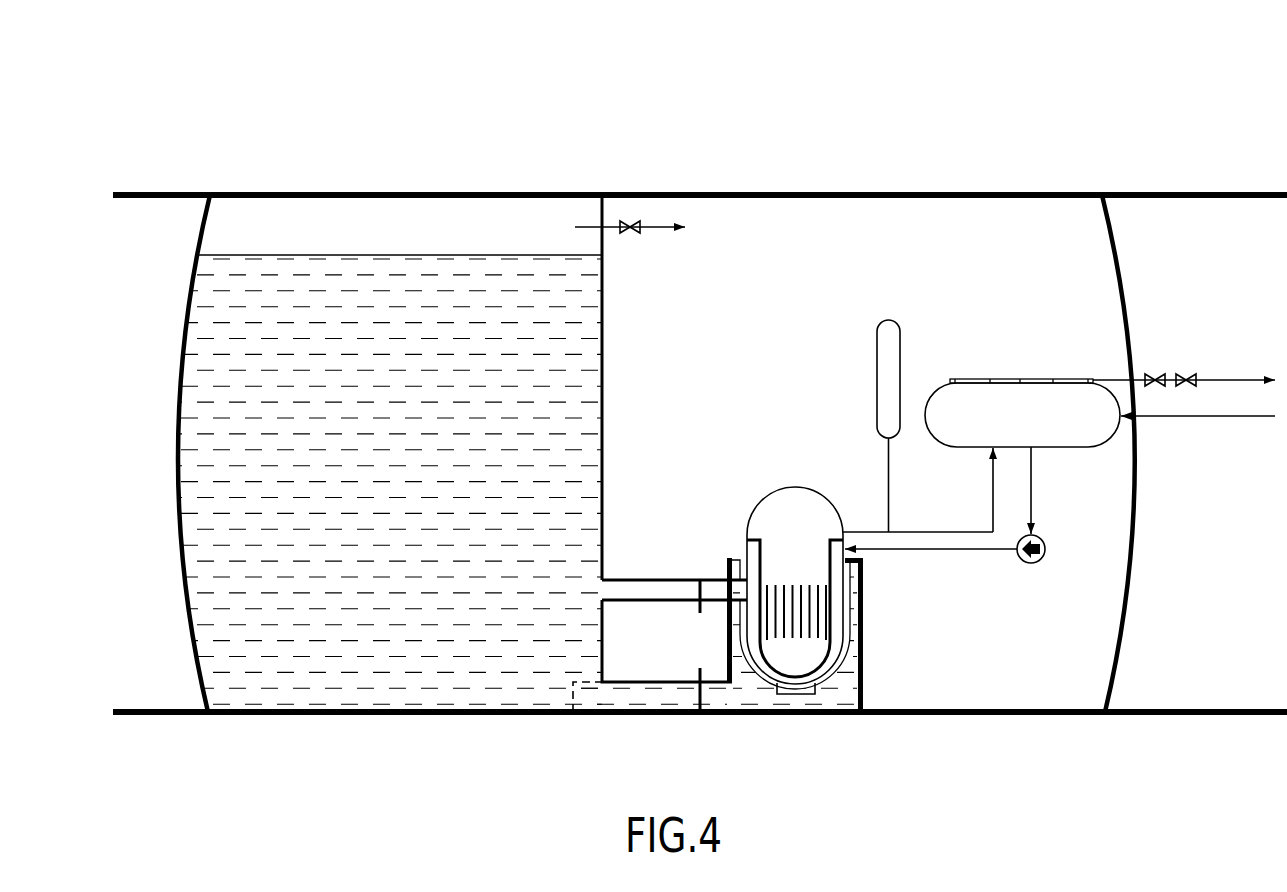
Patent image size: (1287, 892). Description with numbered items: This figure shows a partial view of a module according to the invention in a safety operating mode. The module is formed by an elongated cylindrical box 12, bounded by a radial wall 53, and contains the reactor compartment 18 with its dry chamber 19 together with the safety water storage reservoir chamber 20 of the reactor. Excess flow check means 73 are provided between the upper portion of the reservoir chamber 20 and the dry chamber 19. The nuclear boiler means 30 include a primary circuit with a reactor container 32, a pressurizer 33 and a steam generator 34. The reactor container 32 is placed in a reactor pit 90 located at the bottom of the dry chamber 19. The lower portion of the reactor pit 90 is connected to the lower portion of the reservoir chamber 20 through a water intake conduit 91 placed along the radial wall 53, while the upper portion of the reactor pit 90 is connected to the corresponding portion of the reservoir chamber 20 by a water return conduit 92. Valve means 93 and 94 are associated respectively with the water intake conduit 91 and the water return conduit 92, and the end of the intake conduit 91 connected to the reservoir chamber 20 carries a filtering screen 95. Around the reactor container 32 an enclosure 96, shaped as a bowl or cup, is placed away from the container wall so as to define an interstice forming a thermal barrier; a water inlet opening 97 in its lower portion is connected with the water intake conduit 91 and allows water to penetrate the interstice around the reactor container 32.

The elongated cylindrical box 12 is at (1018, 122).
The reactor compartment 18 is at (606, 183).
The dry chamber 19 is at (889, 183).
The safety water storage reservoir chamber 20 is at (376, 183).
The nuclear boiler means 30 is at (758, 521).
The reactor container 32 is at (752, 493).
The pressurizer 33 is at (910, 327).
The steam generator 34 is at (1022, 373).
The radial wall 53 is at (436, 724).
The excess flow check means 73 is at (634, 218).
The reactor pit 90 is at (876, 633).
The water intake conduit 91 is at (631, 698).
The water return conduit 92 is at (679, 575).
The valve means 93 is at (697, 670).
The valve means 94 is at (697, 607).
The filtering screen 95 is at (564, 692).
The enclosure 96 is at (840, 678).
The water inlet opening 97 is at (791, 703).